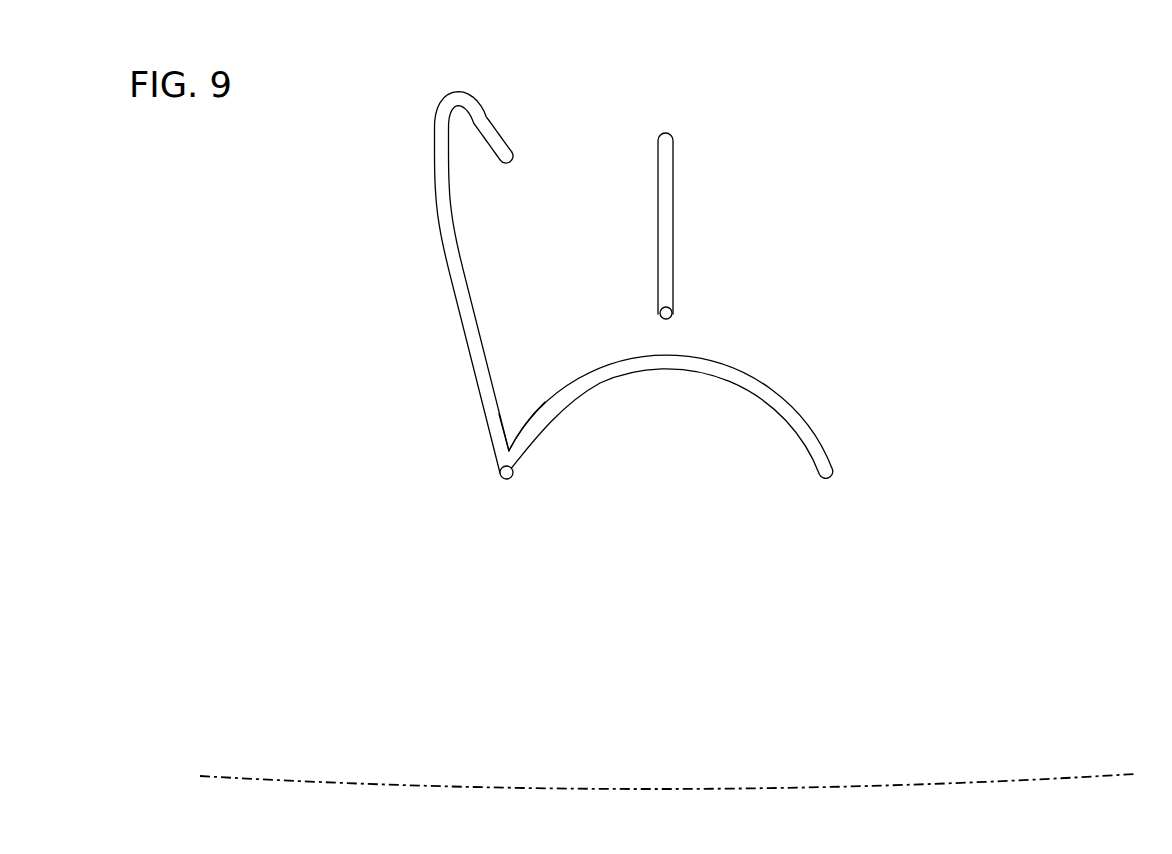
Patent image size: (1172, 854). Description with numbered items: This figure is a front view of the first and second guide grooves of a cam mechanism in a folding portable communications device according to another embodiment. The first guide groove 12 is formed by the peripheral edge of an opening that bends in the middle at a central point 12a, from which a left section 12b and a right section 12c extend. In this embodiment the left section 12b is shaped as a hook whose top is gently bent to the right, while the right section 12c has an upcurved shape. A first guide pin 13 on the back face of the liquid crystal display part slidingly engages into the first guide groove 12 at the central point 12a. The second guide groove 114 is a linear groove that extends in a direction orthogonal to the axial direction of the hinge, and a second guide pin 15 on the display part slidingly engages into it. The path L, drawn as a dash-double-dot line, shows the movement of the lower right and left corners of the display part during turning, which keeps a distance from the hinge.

The first guide groove 12 is at (604, 320).
The central point 12a is at (508, 479).
The left section 12b is at (460, 315).
The right section 12c is at (665, 371).
The first guide pin 13 is at (502, 477).
The second guide groove 114 is at (673, 207).
The second guide pin 15 is at (673, 315).
The path L is at (697, 788).